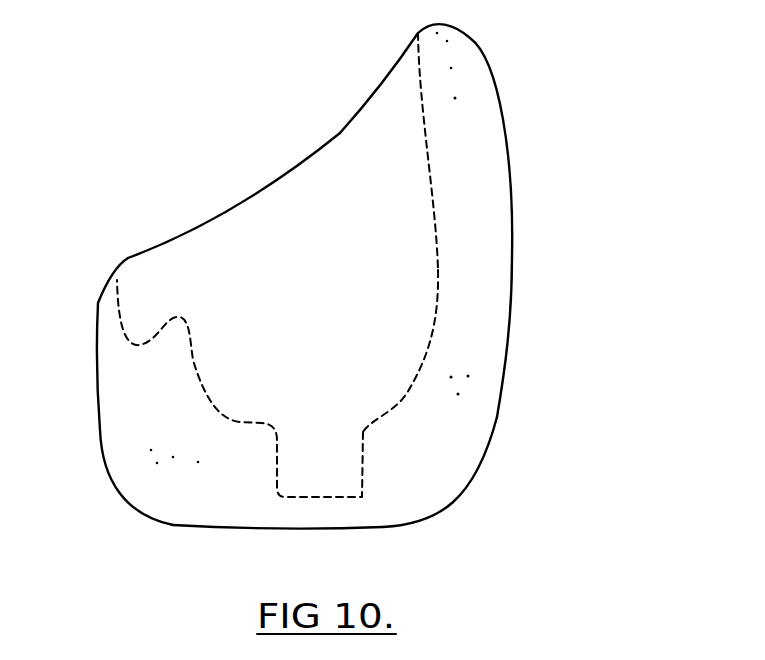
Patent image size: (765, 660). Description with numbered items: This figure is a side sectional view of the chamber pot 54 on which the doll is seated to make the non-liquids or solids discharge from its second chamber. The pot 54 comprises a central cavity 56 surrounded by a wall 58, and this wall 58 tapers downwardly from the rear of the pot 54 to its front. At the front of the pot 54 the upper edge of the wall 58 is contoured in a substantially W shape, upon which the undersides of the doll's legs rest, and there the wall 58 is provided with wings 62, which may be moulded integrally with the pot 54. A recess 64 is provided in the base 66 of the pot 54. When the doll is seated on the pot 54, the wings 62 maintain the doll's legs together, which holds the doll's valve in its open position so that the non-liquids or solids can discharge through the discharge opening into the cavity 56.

The chamber pot 54 is at (523, 125).
The central cavity 56 is at (262, 237).
The wall 58 is at (496, 300).
The wings 62 is at (173, 333).
The recess 64 is at (348, 478).
The base 66 is at (207, 502).